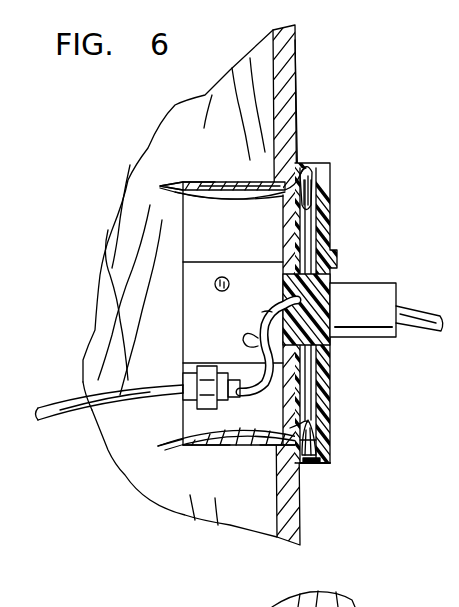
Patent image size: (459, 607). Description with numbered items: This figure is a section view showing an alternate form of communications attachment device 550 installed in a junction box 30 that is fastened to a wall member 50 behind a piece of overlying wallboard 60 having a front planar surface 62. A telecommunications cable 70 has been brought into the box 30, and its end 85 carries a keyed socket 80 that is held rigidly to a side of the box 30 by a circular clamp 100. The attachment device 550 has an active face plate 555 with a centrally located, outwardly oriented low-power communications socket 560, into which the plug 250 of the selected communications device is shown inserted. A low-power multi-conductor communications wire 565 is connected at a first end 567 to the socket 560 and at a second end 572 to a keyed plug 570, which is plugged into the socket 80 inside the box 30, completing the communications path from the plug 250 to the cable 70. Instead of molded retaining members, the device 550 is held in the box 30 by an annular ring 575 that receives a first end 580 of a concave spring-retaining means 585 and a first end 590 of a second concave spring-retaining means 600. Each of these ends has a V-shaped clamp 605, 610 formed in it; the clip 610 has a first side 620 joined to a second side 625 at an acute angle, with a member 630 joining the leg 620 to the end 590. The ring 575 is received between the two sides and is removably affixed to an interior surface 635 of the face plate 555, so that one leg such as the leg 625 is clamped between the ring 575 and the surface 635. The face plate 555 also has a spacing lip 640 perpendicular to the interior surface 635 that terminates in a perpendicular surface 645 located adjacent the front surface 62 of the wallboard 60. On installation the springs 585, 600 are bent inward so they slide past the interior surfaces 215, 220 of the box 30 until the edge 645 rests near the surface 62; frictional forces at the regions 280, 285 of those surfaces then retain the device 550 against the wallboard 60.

The junction box 30 is at (193, 284).
The wall member 50 is at (243, 60).
The wallboard 60 is at (295, 28).
The front planar surface 62 is at (296, 72).
The telecommunications cable 70 is at (60, 405).
The keyed socket 80 is at (178, 392).
The end of cable 85 is at (162, 386).
The circular clamp 100 is at (223, 380).
The interior surface 215 is at (217, 183).
The interior surface 220 is at (224, 444).
The plug 250 is at (372, 297).
The region 280 is at (178, 186).
The region 285 is at (186, 449).
The communications attachment device 550 is at (345, 341).
The active face plate 555 is at (325, 228).
The low-power communications socket 560 is at (336, 279).
The low-power multi-conductor communications wire 565 is at (258, 307).
The first end 567 is at (284, 266).
The keyed plug 570 is at (247, 389).
The second end 572 is at (250, 355).
The annular ring 575 is at (312, 407).
The first end 580 is at (280, 183).
The concave spring-retaining means 585 is at (231, 186).
The first end 590 is at (272, 447).
The second concave spring-retaining means 600 is at (241, 447).
The V-shaped clamp 605 is at (291, 203).
The V-shaped clamp 610 is at (292, 424).
The first side 620 is at (320, 455).
The second side 625 is at (312, 436).
The member 630 is at (308, 462).
The interior surface 635 is at (313, 392).
The spacing edge or lip 640 is at (315, 463).
The perpendicular surface 645 is at (298, 166).